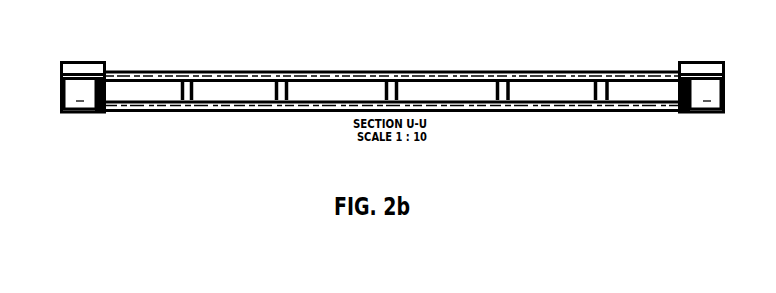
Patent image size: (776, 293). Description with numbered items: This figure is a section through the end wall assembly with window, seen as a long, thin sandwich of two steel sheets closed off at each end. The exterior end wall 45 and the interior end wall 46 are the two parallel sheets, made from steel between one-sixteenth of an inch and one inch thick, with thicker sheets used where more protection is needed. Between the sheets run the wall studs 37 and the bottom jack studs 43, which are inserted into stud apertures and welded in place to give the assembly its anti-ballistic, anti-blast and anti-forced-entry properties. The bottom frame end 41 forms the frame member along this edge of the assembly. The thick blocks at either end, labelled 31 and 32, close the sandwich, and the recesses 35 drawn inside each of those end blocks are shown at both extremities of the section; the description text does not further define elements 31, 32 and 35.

The first end cap 31 is at (712, 62).
The second end cap 32 is at (84, 62).
The end cap recess 35 is at (80, 100).
The wall studs 37 is at (277, 90).
The bottom frame end 41 is at (165, 92).
The bottom jack studs 43 is at (389, 88).
The exterior end wall 45 is at (352, 92).
The interior end wall 46 is at (217, 75).